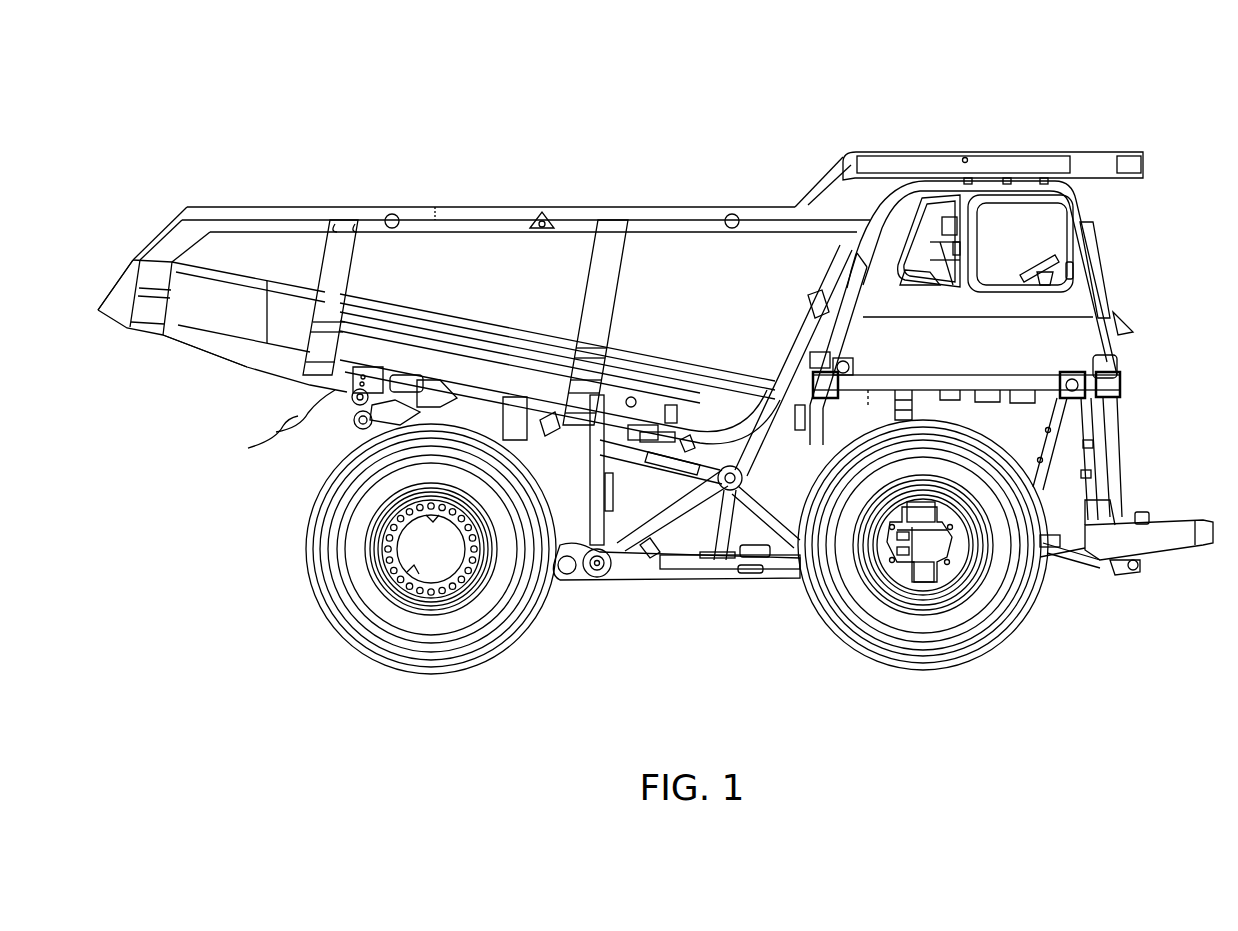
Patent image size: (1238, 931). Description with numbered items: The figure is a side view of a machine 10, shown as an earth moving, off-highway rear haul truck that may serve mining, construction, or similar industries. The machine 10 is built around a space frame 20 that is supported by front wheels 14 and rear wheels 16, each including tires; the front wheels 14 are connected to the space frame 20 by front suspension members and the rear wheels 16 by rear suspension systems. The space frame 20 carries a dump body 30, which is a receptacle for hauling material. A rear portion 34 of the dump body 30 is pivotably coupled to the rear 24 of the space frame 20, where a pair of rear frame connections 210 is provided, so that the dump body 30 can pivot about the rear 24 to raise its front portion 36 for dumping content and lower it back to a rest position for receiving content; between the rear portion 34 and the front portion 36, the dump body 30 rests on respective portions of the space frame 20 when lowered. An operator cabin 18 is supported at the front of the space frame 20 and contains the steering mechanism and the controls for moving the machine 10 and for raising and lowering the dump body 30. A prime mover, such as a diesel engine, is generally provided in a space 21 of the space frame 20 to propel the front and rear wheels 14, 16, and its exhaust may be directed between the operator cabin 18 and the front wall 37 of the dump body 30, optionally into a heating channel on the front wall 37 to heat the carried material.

The machine 10 is at (508, 168).
The front wheels 14 is at (928, 613).
The rear wheels 16 is at (431, 600).
The operator cabin 18 is at (1104, 240).
The space frame 20 is at (669, 604).
The space 21 is at (1018, 444).
The rear of the space frame 24 is at (256, 470).
The dump body 30 is at (354, 206).
The rear portion of the dump body 34 is at (154, 492).
The front portion of the dump body 36 is at (838, 140).
The front wall of the dump body 37 is at (848, 243).
The rear frame connections 210 is at (353, 418).